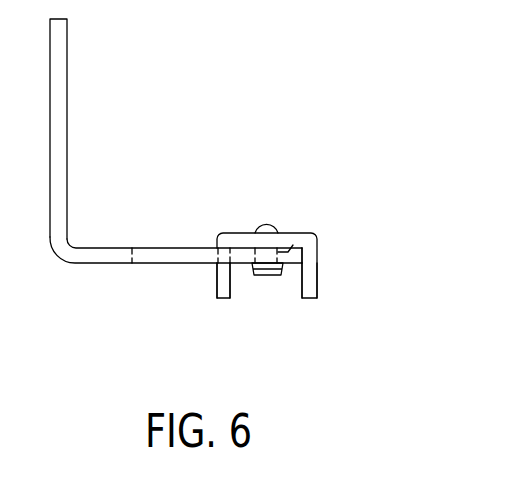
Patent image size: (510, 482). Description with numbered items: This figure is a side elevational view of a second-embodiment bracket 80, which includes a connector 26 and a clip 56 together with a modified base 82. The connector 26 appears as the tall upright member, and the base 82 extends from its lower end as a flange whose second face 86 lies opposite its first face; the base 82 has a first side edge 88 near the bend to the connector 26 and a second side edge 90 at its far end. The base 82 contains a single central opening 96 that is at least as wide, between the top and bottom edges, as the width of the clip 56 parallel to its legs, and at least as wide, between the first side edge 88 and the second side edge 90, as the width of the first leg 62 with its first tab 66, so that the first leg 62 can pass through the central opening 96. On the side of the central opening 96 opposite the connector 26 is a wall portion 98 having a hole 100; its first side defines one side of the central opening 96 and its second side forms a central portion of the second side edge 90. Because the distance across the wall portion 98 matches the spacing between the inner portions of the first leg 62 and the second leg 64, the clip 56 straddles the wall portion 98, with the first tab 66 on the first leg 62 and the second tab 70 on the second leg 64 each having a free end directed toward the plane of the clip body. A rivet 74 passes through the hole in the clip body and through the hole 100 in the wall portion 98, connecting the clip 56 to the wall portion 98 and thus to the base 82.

The bracket 80 is at (173, 55).
The connector 26 is at (68, 83).
The base 82 is at (82, 265).
The first side edge 88 is at (72, 245).
The second face 86 is at (113, 265).
The central opening 96 is at (165, 258).
The clip 56 is at (307, 237).
The first leg 62 is at (222, 298).
The second leg 64 is at (312, 298).
The first tab 66 is at (217, 279).
The second tab 70 is at (317, 278).
The second side edge 90 is at (305, 256).
The hole 100 is at (293, 245).
The rivet 74 is at (267, 227).
The wall portion 98 is at (238, 252).